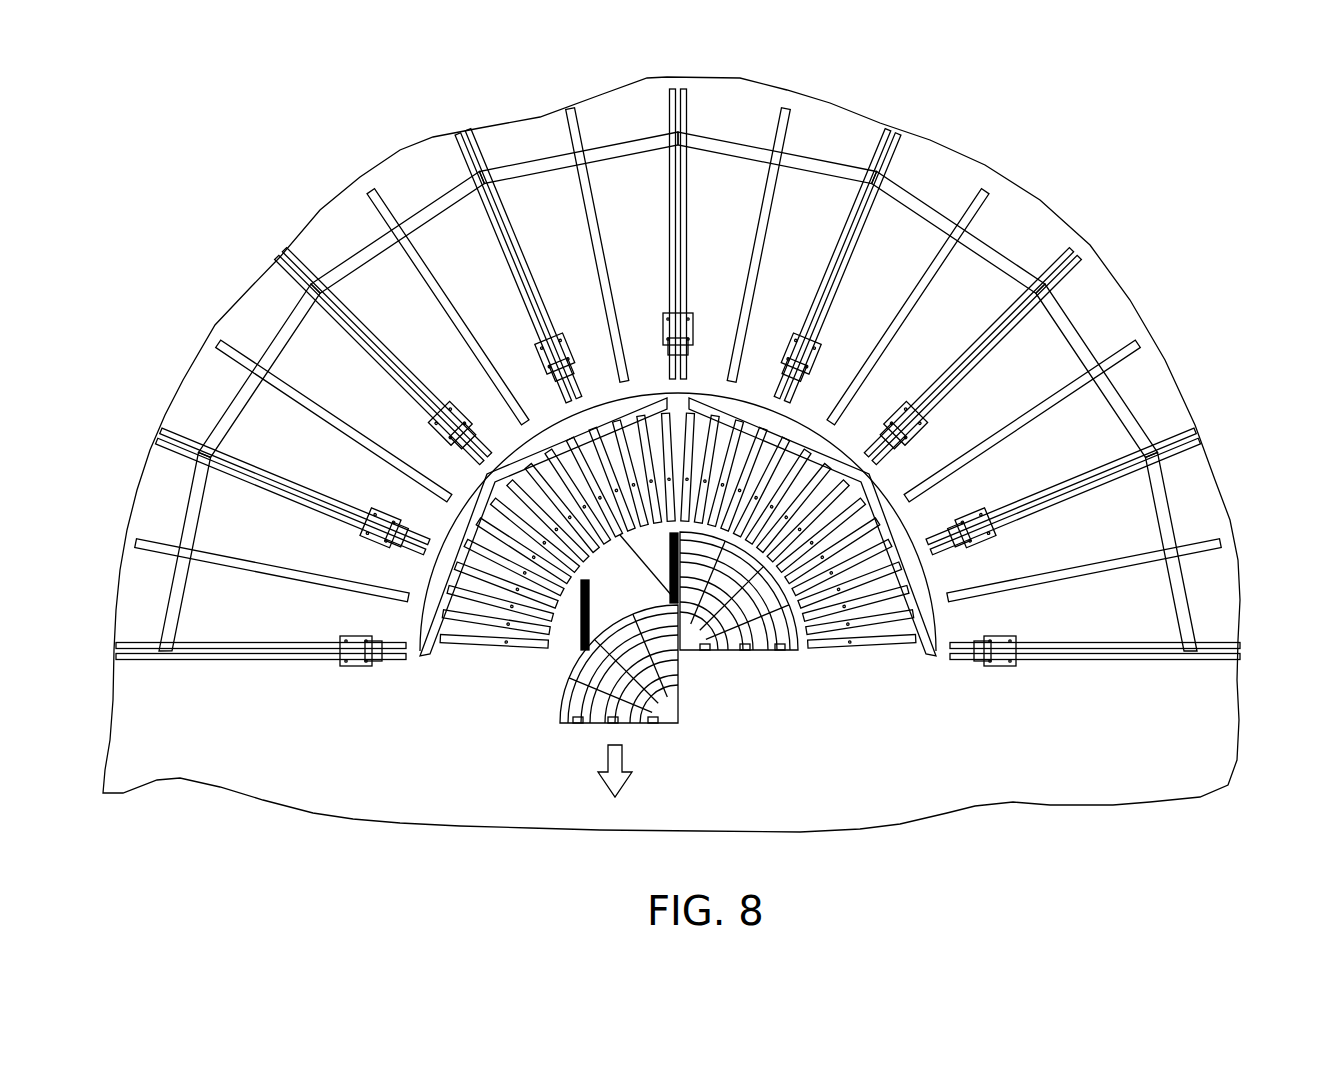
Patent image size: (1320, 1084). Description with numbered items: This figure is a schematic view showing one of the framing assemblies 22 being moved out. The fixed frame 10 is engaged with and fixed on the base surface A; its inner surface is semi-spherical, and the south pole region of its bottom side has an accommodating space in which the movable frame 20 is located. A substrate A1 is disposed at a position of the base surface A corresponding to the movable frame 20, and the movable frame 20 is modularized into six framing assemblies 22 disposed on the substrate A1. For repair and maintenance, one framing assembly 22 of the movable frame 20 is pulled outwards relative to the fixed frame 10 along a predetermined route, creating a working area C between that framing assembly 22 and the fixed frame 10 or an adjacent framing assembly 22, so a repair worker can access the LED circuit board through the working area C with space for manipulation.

The fixed frame 10 is at (228, 680).
The movable frame 20 is at (508, 713).
The framing assembly 22 is at (429, 675).
The working area C is at (613, 588).
The substrate A1 is at (935, 615).
The base surface A is at (1205, 738).